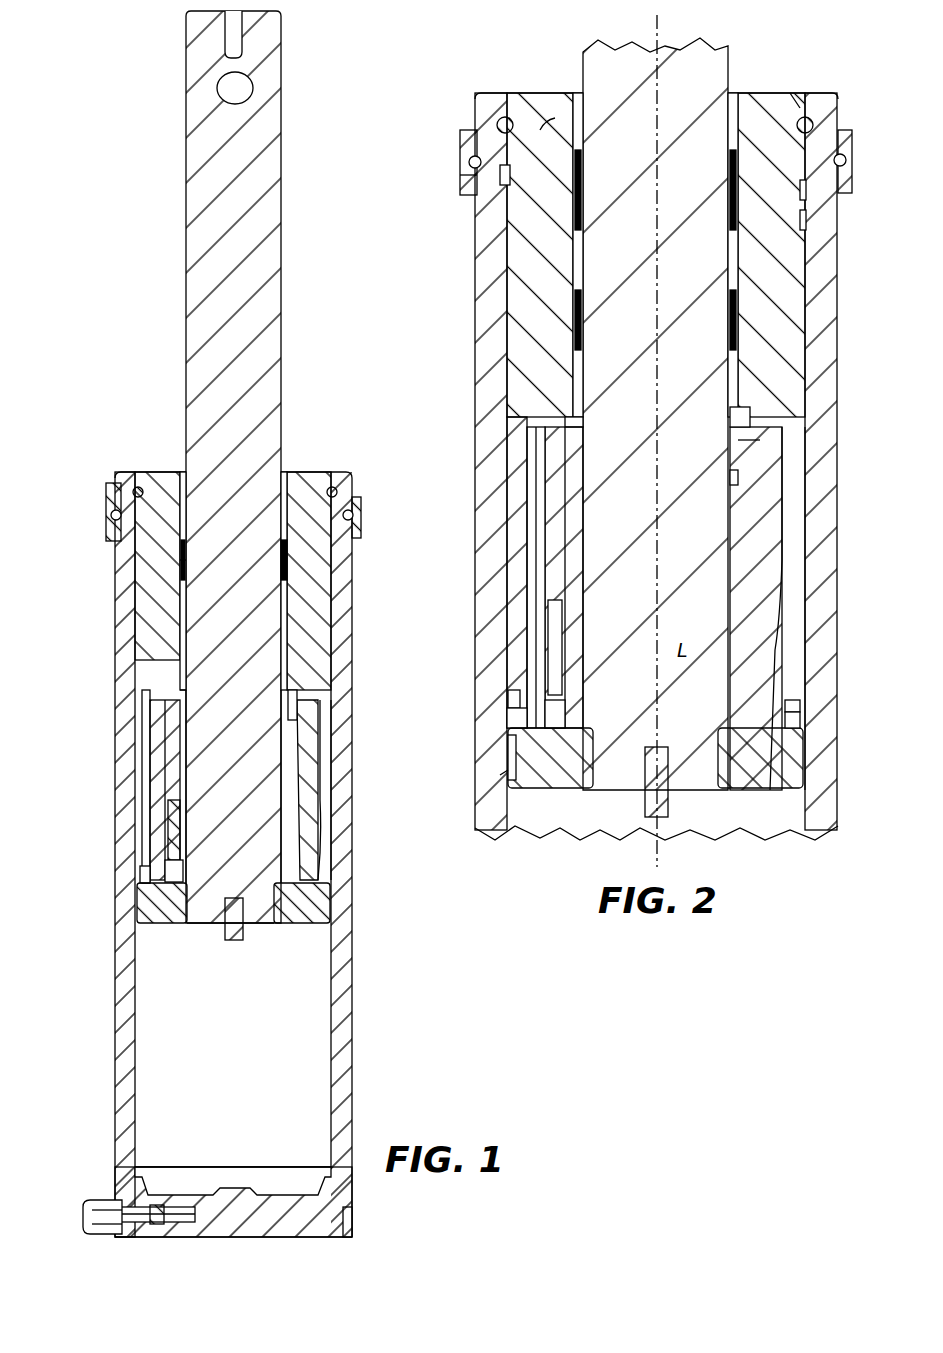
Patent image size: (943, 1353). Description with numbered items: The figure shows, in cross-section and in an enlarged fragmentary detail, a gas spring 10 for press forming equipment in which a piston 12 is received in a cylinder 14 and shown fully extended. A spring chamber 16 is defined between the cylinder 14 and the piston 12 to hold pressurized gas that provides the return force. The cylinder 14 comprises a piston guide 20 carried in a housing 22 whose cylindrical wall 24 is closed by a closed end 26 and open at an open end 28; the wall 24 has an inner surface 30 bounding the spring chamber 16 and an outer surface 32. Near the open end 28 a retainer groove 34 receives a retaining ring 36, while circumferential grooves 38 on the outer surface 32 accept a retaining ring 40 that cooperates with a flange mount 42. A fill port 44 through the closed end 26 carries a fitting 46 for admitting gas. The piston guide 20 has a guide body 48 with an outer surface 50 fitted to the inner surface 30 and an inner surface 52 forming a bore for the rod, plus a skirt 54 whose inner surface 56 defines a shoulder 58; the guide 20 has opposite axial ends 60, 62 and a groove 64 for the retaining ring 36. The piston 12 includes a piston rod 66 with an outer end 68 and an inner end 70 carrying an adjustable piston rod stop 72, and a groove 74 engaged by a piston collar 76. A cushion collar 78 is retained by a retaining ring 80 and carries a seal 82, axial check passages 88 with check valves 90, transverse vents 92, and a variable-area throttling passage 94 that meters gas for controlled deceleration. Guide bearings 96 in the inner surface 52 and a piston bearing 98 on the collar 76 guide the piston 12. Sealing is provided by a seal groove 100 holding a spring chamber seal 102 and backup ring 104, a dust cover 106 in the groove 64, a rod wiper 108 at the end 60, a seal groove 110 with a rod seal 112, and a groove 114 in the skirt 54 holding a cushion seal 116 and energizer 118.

In FIG. 1, the gas spring 10 is at (137, 150).
In FIG. 1, the piston 12 is at (245, 870).
In FIG. 1, the cylinder 14 is at (237, 666).
In FIG. 2, the cylinder 14 is at (560, 60).
In FIG. 1, the spring chamber 16 is at (230, 1065).
In FIG. 2, the spring chamber 16 is at (605, 826).
In FIG. 1, the piston guide 20 is at (331, 630).
In FIG. 2, the piston guide 20 is at (840, 300).
In FIG. 1, the housing 22 is at (245, 870).
In FIG. 1, the cylindrical wall 24 is at (345, 800).
In FIG. 2, the cylindrical wall 24 is at (830, 545).
In FIG. 1, the closed end 26 is at (245, 1197).
In FIG. 1, the open end 28 is at (350, 475).
In FIG. 2, the open end 28 is at (825, 95).
In FIG. 1, the inner surface 30 is at (330, 1010).
In FIG. 1, the outer surface 32 is at (352, 1045).
In FIG. 2, the retainer groove 34 is at (525, 100).
In FIG. 1, the retaining ring 36 is at (357, 512).
In FIG. 2, the retaining ring 36 is at (845, 130).
In FIG. 1, the circumferential grooves 38 is at (345, 1210).
In FIG. 2, the circumferential grooves 38 is at (465, 175).
In FIG. 1, the retaining ring 40 is at (110, 512).
In FIG. 2, the retaining ring 40 is at (470, 150).
In FIG. 1, the flange mount 42 is at (112, 493).
In FIG. 2, the flange mount 42 is at (470, 115).
In FIG. 1, the fill port 44 is at (140, 1225).
In FIG. 1, the fitting 46 is at (98, 1200).
In FIG. 1, the guide body 48 is at (318, 650).
In FIG. 2, the guide body 48 is at (780, 360).
In FIG. 1, the outer surface 50 is at (302, 680).
In FIG. 2, the outer surface 50 is at (800, 430).
In FIG. 1, the inner surface 52 is at (190, 580).
In FIG. 2, the inner surface 52 is at (585, 250).
In FIG. 1, the skirt 54 is at (150, 715).
In FIG. 2, the skirt 54 is at (520, 495).
In FIG. 1, the inner surface 56 is at (150, 740).
In FIG. 2, the inner surface 56 is at (540, 525).
In FIG. 1, the shoulder 58 is at (300, 725).
In FIG. 2, the shoulder 58 is at (740, 460).
In FIG. 1, the axial end 60 is at (330, 470).
In FIG. 2, the axial end 60 is at (770, 110).
In FIG. 1, the axial end 62 is at (150, 865).
In FIG. 2, the axial end 62 is at (520, 685).
In FIG. 1, the groove 64 is at (352, 492).
In FIG. 2, the groove 64 is at (835, 110).
In FIG. 1, the piston rod 66 is at (205, 489).
In FIG. 2, the piston rod 66 is at (647, 414).
In FIG. 1, the rod end 68 is at (270, 38).
In FIG. 1, the rod end 70 is at (265, 925).
In FIG. 1, the piston rod stop 72 is at (225, 925).
In FIG. 2, the piston rod stop 72 is at (640, 803).
In FIG. 1, the groove 74 is at (150, 905).
In FIG. 2, the groove 74 is at (530, 760).
In FIG. 1, the piston collar 76 is at (312, 925).
In FIG. 1, the cushion collar 78 is at (150, 775).
In FIG. 2, the cushion collar 78 is at (520, 560).
In FIG. 1, the retaining ring 80 is at (270, 690).
In FIG. 2, the retaining ring 80 is at (735, 430).
In FIG. 1, the seal 82 is at (155, 690).
In FIG. 2, the seal 82 is at (560, 475).
In FIG. 1, the check passages 88 is at (170, 805).
In FIG. 2, the check passages 88 is at (545, 605).
In FIG. 1, the check valve 90 is at (170, 850).
In FIG. 2, the check valve 90 is at (545, 640).
In FIG. 2, the vents 92 is at (500, 775).
In FIG. 1, the throttling passage 94 is at (320, 830).
In FIG. 2, the throttling passage 94 is at (780, 575).
In FIG. 1, the guide bearings 96 is at (165, 570).
In FIG. 2, the guide bearings 96 is at (540, 130).
In FIG. 2, the piston bearing 98 is at (520, 750).
In FIG. 2, the seal groove 100 is at (505, 175).
In FIG. 2, the spring chamber seal 102 is at (835, 220).
In FIG. 2, the backup ring 104 is at (830, 190).
In FIG. 2, the dust cover 106 is at (795, 95).
In FIG. 1, the rod wiper 108 is at (295, 470).
In FIG. 2, the rod wiper 108 is at (760, 95).
In FIG. 2, the seal groove 110 is at (575, 425).
In FIG. 1, the rod seal 112 is at (295, 700).
In FIG. 2, the rod seal 112 is at (770, 440).
In FIG. 2, the groove 114 is at (510, 710).
In FIG. 2, the cushion seal 116 is at (790, 705).
In FIG. 2, the energizer 118 is at (790, 715).